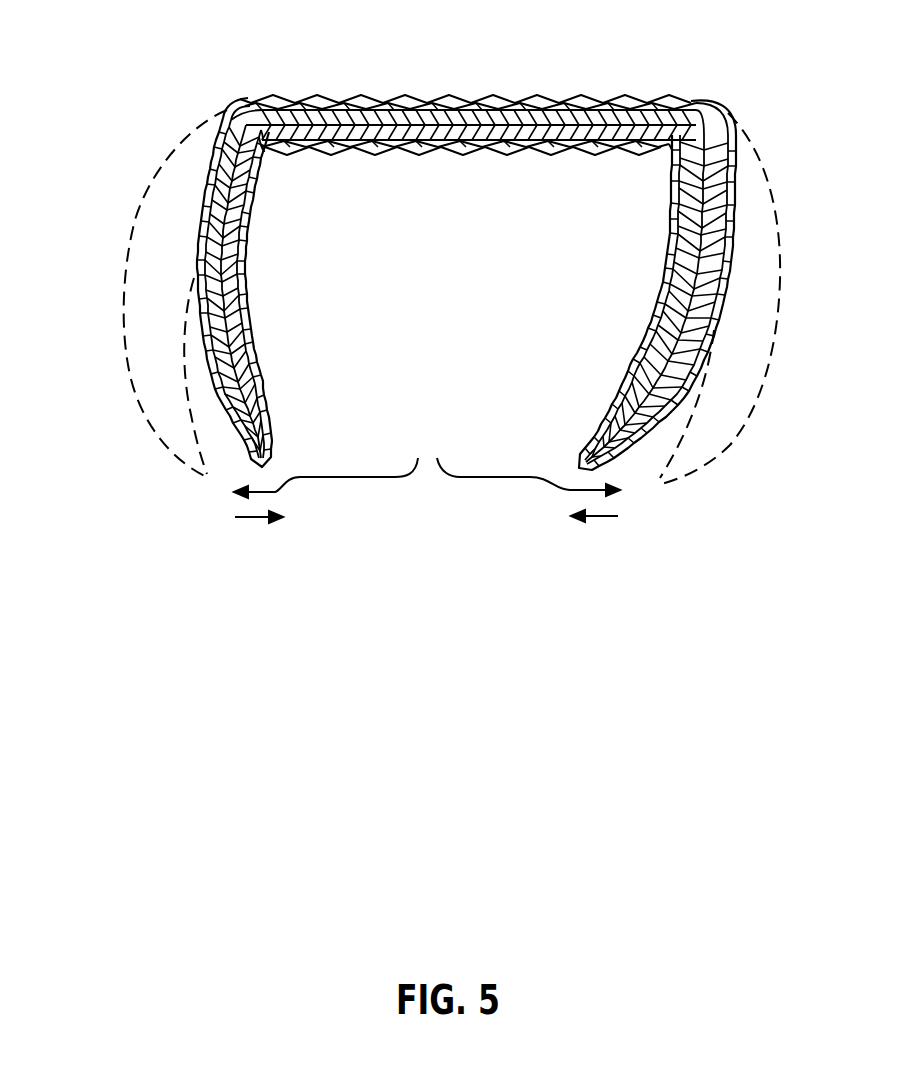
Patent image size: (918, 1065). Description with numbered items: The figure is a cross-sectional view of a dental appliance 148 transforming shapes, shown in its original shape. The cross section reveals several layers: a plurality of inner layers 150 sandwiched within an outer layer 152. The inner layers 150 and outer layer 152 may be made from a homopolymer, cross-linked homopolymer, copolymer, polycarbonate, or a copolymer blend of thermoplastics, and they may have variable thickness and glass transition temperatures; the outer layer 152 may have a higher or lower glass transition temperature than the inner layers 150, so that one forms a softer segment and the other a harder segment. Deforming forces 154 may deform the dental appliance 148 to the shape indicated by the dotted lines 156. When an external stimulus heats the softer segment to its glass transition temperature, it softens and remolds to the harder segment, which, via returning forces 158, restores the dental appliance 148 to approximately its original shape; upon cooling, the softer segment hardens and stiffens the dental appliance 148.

The dental appliance 148 is at (490, 243).
The inner layers 150 is at (355, 118).
The outer layer 152 is at (498, 97).
The deforming forces 154 is at (427, 463).
The dotted lines 156 is at (127, 352).
The returning forces 158 is at (262, 520).